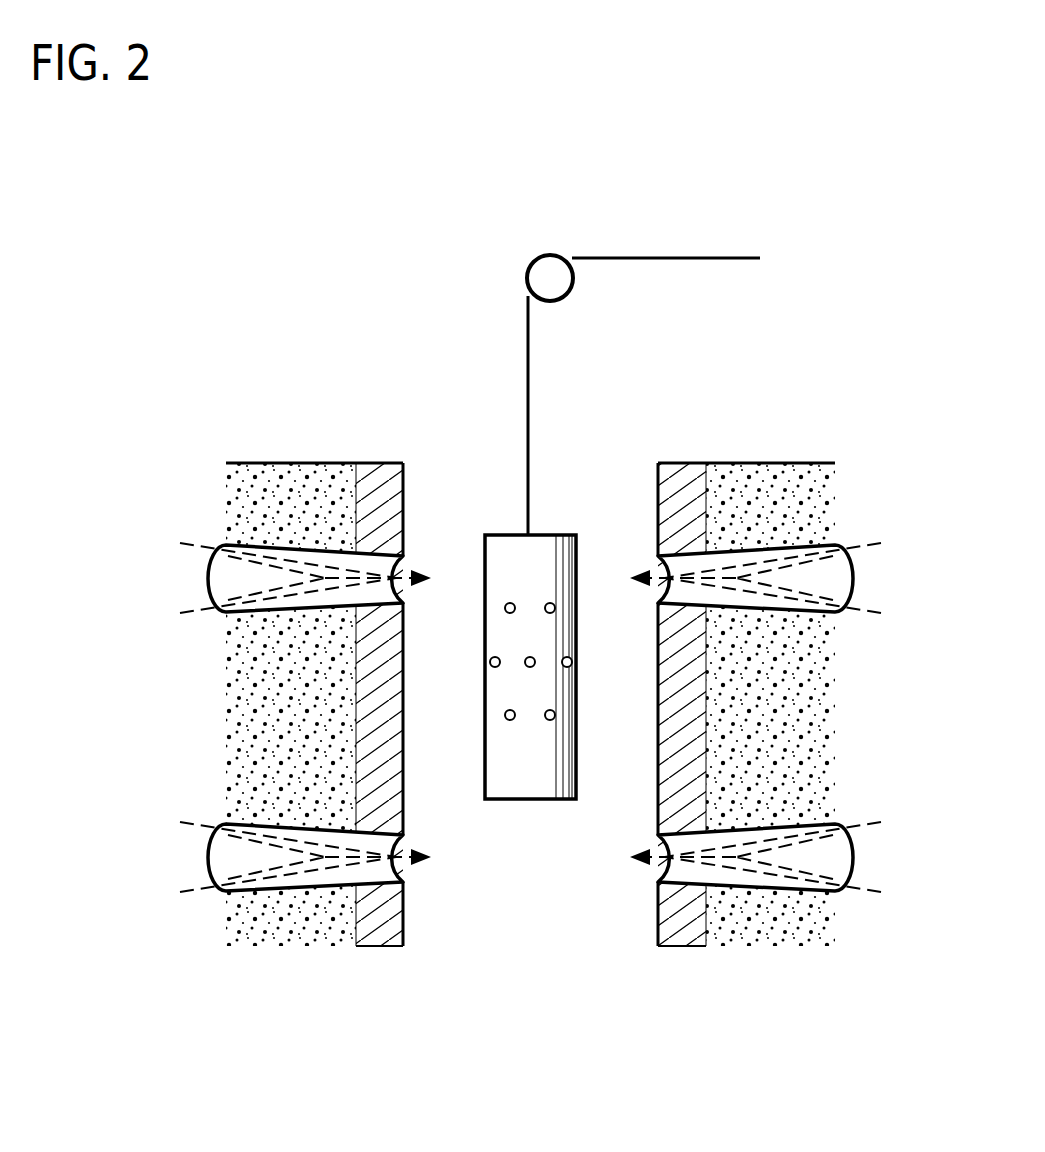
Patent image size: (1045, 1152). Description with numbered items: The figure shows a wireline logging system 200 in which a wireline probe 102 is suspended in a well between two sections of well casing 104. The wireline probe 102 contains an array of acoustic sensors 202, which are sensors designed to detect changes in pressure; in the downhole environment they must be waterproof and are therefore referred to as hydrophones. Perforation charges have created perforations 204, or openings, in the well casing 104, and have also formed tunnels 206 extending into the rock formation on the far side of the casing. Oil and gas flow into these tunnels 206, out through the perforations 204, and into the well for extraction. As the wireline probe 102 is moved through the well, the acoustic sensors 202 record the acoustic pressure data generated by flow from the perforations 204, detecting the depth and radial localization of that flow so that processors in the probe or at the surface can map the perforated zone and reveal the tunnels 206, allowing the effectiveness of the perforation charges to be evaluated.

The wireline logging system 200 is at (287, 266).
The well casing 104 is at (373, 468).
The wireline probe 102 is at (553, 533).
The acoustic sensors 202 is at (514, 612).
The perforations 204 is at (401, 562).
The tunnels 206 is at (232, 616).